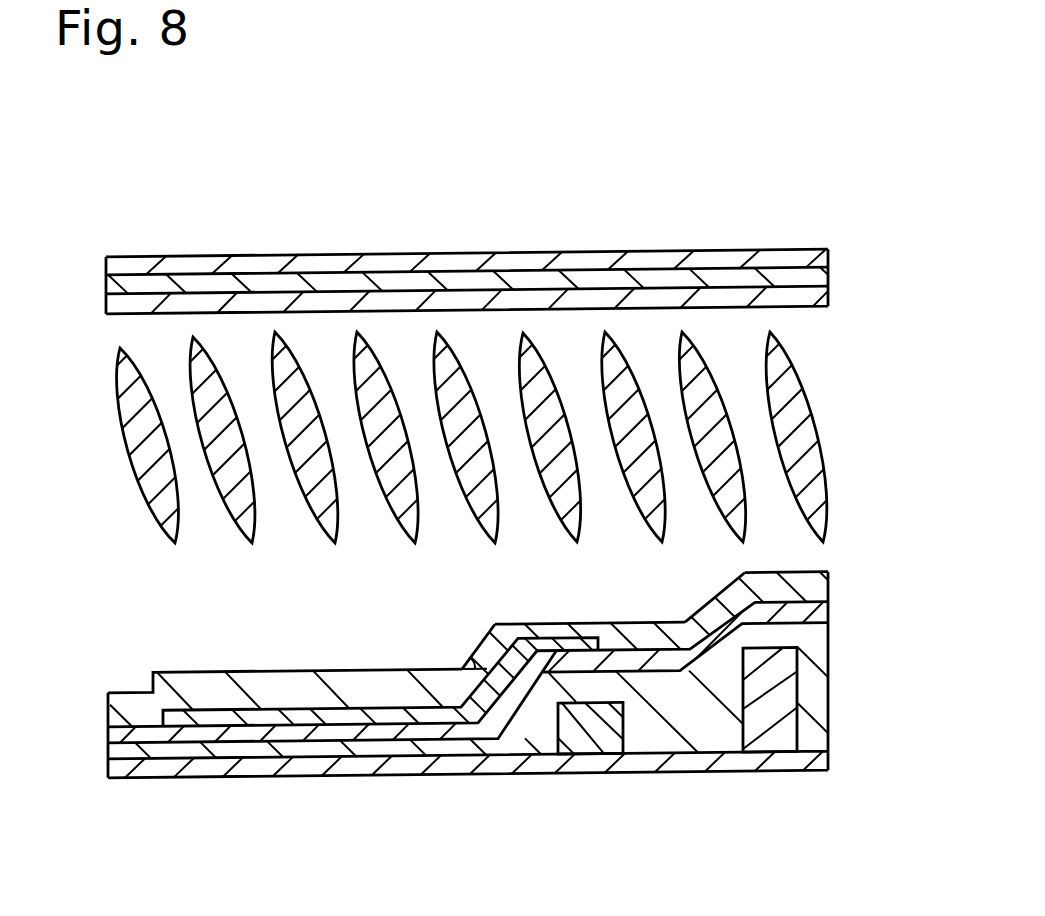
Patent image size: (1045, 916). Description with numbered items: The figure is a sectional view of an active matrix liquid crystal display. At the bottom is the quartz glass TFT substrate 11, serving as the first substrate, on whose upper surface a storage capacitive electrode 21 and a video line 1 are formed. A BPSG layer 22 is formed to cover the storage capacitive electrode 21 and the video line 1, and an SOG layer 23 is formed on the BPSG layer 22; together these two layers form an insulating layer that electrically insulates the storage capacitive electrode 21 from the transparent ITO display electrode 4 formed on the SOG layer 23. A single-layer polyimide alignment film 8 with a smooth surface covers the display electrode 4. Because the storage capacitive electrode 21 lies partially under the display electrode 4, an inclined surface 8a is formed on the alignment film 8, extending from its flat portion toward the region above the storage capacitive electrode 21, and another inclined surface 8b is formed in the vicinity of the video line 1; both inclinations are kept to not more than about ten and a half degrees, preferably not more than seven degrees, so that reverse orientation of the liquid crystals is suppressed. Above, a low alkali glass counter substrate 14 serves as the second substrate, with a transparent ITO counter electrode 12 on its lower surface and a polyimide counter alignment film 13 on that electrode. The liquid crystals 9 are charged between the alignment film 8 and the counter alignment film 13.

The counter substrate 14 is at (388, 254).
The counter electrode 12 is at (507, 277).
The counter alignment film 13 is at (650, 296).
The liquid crystals 9 is at (793, 371).
The alignment film 8 is at (830, 578).
The inclined surface 8a is at (484, 644).
The inclined surface 8b is at (708, 597).
The SOG layer 23 is at (830, 617).
The BPSG layer 22 is at (830, 653).
The video line 1 is at (787, 702).
The storage capacitive electrode 21 is at (594, 762).
The display electrode 4 is at (293, 717).
The TFT substrate 11 is at (780, 762).